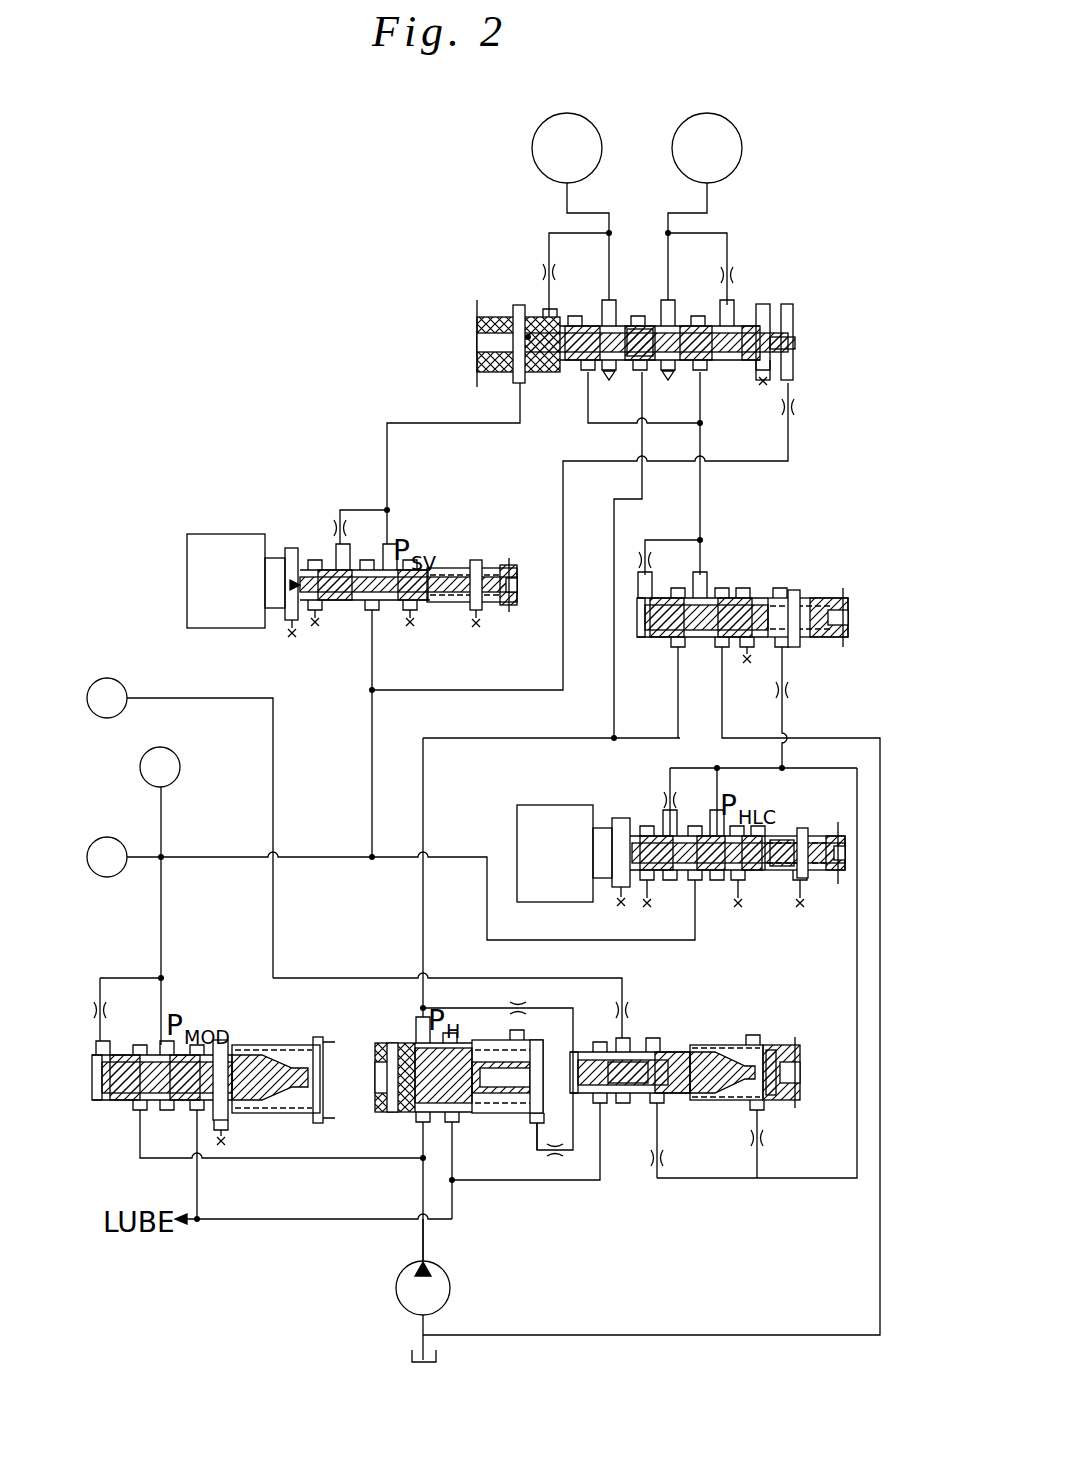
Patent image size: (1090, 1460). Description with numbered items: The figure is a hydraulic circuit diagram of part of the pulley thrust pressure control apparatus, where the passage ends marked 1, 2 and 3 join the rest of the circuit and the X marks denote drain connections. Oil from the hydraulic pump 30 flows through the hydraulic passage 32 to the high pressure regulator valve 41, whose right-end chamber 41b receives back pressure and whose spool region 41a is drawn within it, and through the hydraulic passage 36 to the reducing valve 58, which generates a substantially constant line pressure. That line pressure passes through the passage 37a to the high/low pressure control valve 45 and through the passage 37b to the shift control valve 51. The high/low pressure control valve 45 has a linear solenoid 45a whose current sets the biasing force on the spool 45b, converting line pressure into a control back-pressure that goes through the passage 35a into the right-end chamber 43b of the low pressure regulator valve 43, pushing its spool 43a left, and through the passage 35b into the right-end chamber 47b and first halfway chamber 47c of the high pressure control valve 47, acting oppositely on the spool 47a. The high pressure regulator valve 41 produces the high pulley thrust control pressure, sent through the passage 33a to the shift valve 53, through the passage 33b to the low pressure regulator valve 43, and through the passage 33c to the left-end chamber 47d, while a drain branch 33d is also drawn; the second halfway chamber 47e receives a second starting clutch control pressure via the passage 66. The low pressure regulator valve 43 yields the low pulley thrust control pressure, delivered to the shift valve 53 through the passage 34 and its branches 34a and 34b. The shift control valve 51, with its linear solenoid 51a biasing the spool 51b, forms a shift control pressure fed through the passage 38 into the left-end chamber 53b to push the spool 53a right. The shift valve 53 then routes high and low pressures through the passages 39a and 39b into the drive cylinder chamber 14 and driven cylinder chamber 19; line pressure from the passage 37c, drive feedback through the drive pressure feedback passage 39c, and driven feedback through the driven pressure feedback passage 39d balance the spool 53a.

The driven cylinder chamber 19 is at (552, 165).
The drive cylinder chamber 14 is at (692, 165).
The passage 39a is at (712, 192).
The passage 39b is at (572, 192).
The drive pressure feedback passage 39c is at (738, 244).
The driven pressure feedback passage 39d is at (556, 234).
The shift valve 53 is at (761, 302).
The spool 53a is at (630, 340).
The left-end chamber 53b is at (521, 310).
The passage 38 is at (412, 422).
The passage 34 is at (702, 490).
The passage 34a is at (584, 414).
The passage 34b is at (708, 402).
The passage 33a is at (616, 523).
The low pressure regulator valve 43 is at (790, 582).
The spool 43a is at (676, 658).
The right-end chamber 43b is at (791, 646).
The shift control valve 51 is at (272, 522).
The linear solenoid 51a is at (204, 599).
The spool 51b is at (432, 576).
The passage 37a is at (312, 864).
The passage 37b is at (370, 742).
The passage 37c is at (456, 690).
The passage 66 is at (205, 697).
The passage 35a is at (784, 716).
The passage 35b is at (856, 918).
The high/low pressure control valve 45 is at (542, 794).
The linear solenoid 45a is at (532, 869).
The spool 45b is at (746, 877).
The passage 33b is at (651, 739).
The passage 33c is at (471, 1002).
The oil passage 33d is at (600, 1180).
The high pressure control valve 47 is at (722, 1026).
The spool 47a is at (676, 1094).
The right-end chamber 47b is at (758, 1042).
The first halfway chamber 47c is at (654, 1038).
The left-end chamber 47d is at (573, 1038).
The second halfway chamber 47e is at (627, 1106).
The high pressure regulator valve 41 is at (401, 1026).
The spool of pressure regulating valve 41a is at (461, 1093).
The right-end chamber 41b is at (524, 1040).
The reducing valve 58 is at (258, 1036).
The hydraulic passage 36 is at (278, 1160).
The hydraulic passage 32 is at (427, 1238).
The hydraulic pump 30 is at (450, 1282).
The passage end mark 1 is at (107, 857).
The passage end mark 2 is at (160, 767).
The passage end mark 3 is at (107, 698).